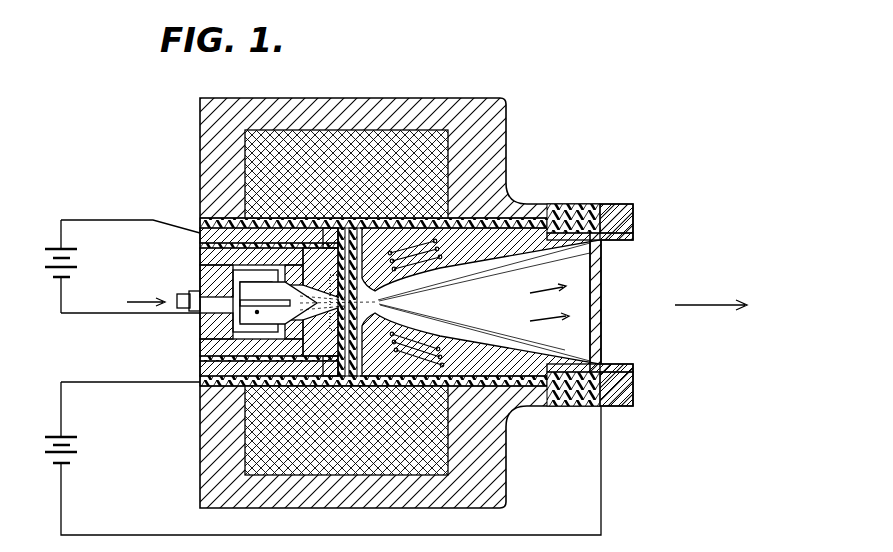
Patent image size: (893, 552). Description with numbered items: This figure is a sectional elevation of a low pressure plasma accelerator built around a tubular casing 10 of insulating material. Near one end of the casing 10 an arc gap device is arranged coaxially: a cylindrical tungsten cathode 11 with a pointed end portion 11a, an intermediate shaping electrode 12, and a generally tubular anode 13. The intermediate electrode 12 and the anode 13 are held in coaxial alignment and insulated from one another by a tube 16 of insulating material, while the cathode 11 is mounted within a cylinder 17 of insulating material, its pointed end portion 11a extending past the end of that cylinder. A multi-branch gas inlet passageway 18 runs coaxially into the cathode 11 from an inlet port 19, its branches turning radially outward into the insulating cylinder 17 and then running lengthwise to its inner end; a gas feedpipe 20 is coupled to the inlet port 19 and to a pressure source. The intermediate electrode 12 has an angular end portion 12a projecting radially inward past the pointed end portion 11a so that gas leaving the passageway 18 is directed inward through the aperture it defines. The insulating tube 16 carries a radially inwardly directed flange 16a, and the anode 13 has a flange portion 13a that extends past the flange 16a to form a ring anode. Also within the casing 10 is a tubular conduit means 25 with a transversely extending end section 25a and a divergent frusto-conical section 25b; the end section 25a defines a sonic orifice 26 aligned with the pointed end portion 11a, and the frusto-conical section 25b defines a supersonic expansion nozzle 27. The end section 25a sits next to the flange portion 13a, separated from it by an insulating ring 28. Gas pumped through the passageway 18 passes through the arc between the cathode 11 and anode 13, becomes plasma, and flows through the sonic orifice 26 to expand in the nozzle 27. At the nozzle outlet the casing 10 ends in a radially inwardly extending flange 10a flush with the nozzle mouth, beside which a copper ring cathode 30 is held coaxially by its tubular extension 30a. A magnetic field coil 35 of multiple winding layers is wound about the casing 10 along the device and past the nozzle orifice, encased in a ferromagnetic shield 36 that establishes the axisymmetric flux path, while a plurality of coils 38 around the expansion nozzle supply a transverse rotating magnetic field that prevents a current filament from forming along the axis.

The tubular casing 10 is at (200, 218).
The radially inwardly extending flange 10a is at (612, 232).
The cathode 11 is at (200, 273).
The pointed end portion 11a is at (292, 300).
The intermediate shaping electrode 12 is at (200, 254).
The angular end portion 12a is at (305, 255).
The anode 13 is at (200, 234).
The flange portion 13a is at (350, 248).
The tube 16 is at (235, 368).
The radially inwardly directed flange 16a is at (342, 247).
The cylinder 17 is at (208, 348).
The multi-branch gas inlet passageway 18 is at (215, 316).
The inlet port 19 is at (197, 312).
The gas feedpipe 20 is at (182, 299).
The tubular conduit means 25 is at (588, 251).
The transversely extending end section 25a is at (345, 382).
The divergent frusto-conical section 25b is at (515, 358).
The sonic orifice 26 is at (372, 322).
The supersonic expansion nozzle 27 is at (510, 295).
The insulating ring 28 is at (352, 302).
The ring cathode 30 is at (625, 214).
The tubular extension 30a is at (573, 205).
The magnetic field coil 35 is at (362, 163).
The ferromagnetic shield 36 is at (498, 102).
The coils 38 is at (430, 249).